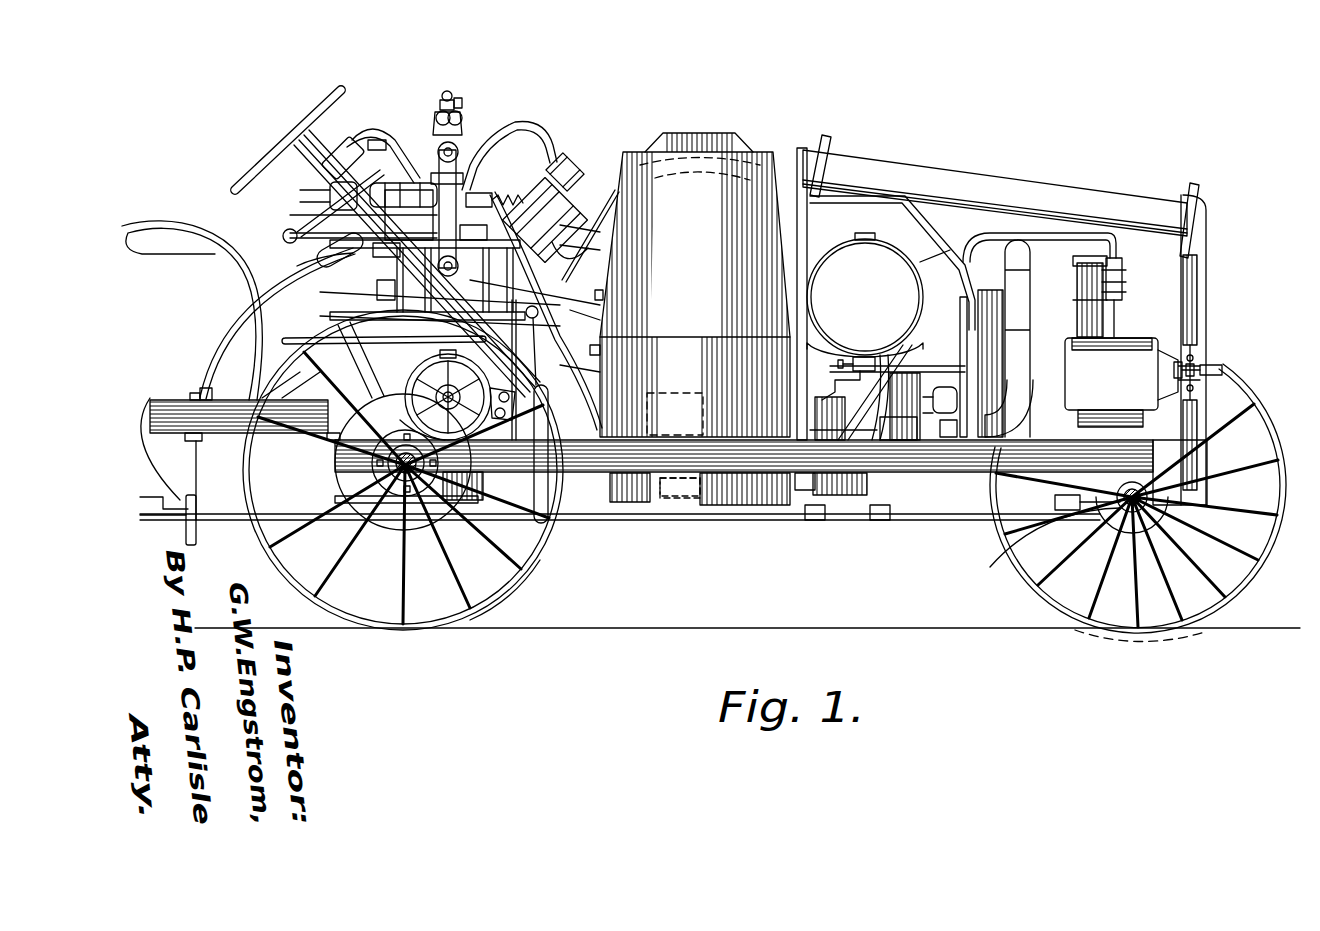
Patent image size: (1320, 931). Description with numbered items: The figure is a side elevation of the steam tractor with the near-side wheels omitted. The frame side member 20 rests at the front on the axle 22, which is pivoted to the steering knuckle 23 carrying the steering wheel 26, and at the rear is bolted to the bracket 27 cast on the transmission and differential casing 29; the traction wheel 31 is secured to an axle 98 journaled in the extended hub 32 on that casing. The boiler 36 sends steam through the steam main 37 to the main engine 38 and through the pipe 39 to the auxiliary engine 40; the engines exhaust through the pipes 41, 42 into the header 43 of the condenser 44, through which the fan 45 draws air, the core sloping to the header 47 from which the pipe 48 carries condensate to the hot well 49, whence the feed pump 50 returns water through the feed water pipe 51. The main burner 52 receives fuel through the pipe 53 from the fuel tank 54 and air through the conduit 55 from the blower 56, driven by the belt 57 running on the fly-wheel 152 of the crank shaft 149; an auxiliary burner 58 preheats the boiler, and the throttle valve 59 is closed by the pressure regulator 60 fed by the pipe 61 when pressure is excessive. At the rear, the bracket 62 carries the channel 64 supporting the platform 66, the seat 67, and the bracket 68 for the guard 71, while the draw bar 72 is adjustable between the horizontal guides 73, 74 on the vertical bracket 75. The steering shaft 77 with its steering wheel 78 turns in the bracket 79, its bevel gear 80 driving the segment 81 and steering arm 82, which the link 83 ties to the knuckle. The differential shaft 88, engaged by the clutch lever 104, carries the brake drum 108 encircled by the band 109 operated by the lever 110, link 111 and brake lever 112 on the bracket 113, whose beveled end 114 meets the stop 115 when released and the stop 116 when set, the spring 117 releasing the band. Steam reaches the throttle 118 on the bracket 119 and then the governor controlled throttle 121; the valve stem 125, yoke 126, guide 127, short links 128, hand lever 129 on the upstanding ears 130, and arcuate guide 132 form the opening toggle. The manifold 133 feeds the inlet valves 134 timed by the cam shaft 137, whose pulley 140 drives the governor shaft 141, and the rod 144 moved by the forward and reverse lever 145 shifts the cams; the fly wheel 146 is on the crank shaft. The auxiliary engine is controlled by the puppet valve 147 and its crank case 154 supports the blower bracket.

The side member 20 is at (585, 470).
The axle 22 is at (1133, 483).
The steering knuckle 23 is at (1060, 540).
The steering wheel 26 is at (1230, 598).
The bracket 27 is at (470, 532).
The transmission and differential casing 29 is at (262, 352).
The traction wheel 31 is at (522, 582).
The extended hub 32 is at (350, 505).
The boiler 36 is at (752, 148).
The steam main 37 is at (600, 297).
The main engine 38 is at (568, 160).
The pipe 39 is at (1043, 242).
The auxiliary engine 40 is at (1102, 250).
The exhaust pipe 41 is at (612, 190).
The exhaust pipe 42 is at (910, 202).
The header 43 is at (812, 150).
The condenser 44 is at (883, 165).
The fan 45 is at (1197, 310).
The header 47 is at (1200, 218).
The pipe 48 is at (1197, 268).
The hot well 49 is at (1040, 400).
The feed pump 50 is at (1047, 384).
The feed water pipe 51 is at (868, 352).
The main burner 52 is at (725, 508).
The fuel pipe 53 is at (806, 478).
The fuel tank 54 is at (1030, 257).
The air supply conduit 55 is at (1112, 332).
The blower 56 is at (1114, 256).
The belt 57 is at (933, 277).
The auxiliary burner 58 is at (867, 483).
The throttle valve 59 is at (880, 520).
The pressure regulator 60 is at (915, 440).
The pipe 61 is at (945, 415).
The bracket 62 is at (327, 437).
The channel 64 is at (178, 482).
The platform 66 is at (200, 425).
The seat 67 is at (192, 258).
The bracket 68 is at (192, 398).
The guard 71 is at (222, 338).
The draw bar 72 is at (238, 520).
The horizontal guide 73 is at (185, 518).
The horizontal guide 74 is at (198, 470).
The vertical bracket 75 is at (196, 441).
The steering shaft 77 is at (265, 162).
The steering wheel 78 is at (272, 140).
The bracket 79 is at (548, 423).
The bevel gear 80 is at (600, 372).
The segment 81 is at (383, 285).
The steering arm 82 is at (550, 515).
The link 83 is at (815, 525).
The differential shaft 88 is at (412, 402).
The axle 98 is at (400, 480).
The clutch lever 104 is at (600, 320).
The brake drum 108 is at (408, 420).
The band 109 is at (395, 466).
The lever 110 is at (503, 418).
The link 111 is at (330, 294).
The brake lever 112 is at (204, 390).
The bracket 113 is at (410, 506).
The beveled end 114 is at (330, 317).
The stop 115 is at (600, 350).
The stop 116 is at (345, 352).
The spring 117 is at (512, 445).
The throttle 118 is at (478, 180).
The bracket 119 is at (497, 194).
The governor controlled throttle 121 is at (462, 178).
The valve stem 125 is at (447, 92).
The yoke 126 is at (388, 183).
The guide 127 is at (283, 236).
The short link 128 is at (376, 142).
The hand lever 129 is at (290, 222).
The upstanding ear 130 is at (452, 146).
The arcuate guide 132 is at (338, 148).
The manifold 133 is at (340, 137).
The inlet valve 134 is at (600, 232).
The cam shaft 137 is at (545, 282).
The pulley 140 is at (540, 296).
The governor shaft 141 is at (458, 100).
The rod 144 is at (600, 250).
The forward and reverse lever 145 is at (305, 262).
The fly wheel 146 is at (885, 262).
The puppet valve 147 is at (1195, 290).
The crank shaft 149 is at (1212, 375).
The fly-wheel 152 is at (980, 475).
The crank case 154 is at (1222, 370).